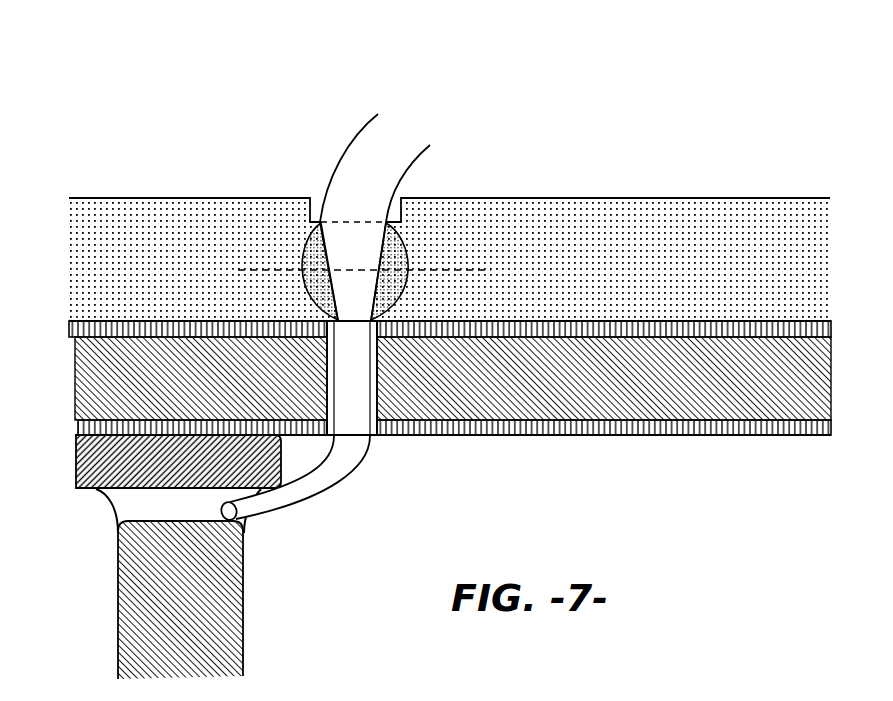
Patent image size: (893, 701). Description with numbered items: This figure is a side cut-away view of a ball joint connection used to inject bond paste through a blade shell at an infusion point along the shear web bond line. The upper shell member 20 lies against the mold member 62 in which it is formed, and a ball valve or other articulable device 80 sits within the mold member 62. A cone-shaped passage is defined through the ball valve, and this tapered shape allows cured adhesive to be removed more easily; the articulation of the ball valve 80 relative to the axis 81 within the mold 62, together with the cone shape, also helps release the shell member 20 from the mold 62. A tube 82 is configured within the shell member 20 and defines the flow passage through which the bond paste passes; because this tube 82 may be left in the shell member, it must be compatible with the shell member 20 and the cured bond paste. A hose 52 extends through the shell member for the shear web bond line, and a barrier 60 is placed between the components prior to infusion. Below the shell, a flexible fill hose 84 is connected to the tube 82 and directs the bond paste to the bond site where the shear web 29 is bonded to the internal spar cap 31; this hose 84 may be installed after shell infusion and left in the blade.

The mold member 62 is at (668, 222).
The upper shell member 20 is at (618, 393).
The tube 82 is at (357, 392).
The axis 81 is at (275, 262).
The ball valve 80 is at (395, 247).
The hose 52 is at (320, 157).
The internal spar cap 31 is at (70, 441).
The barrier 60 is at (100, 507).
The shear web 29 is at (110, 617).
The flexible fill hose 84 is at (302, 480).